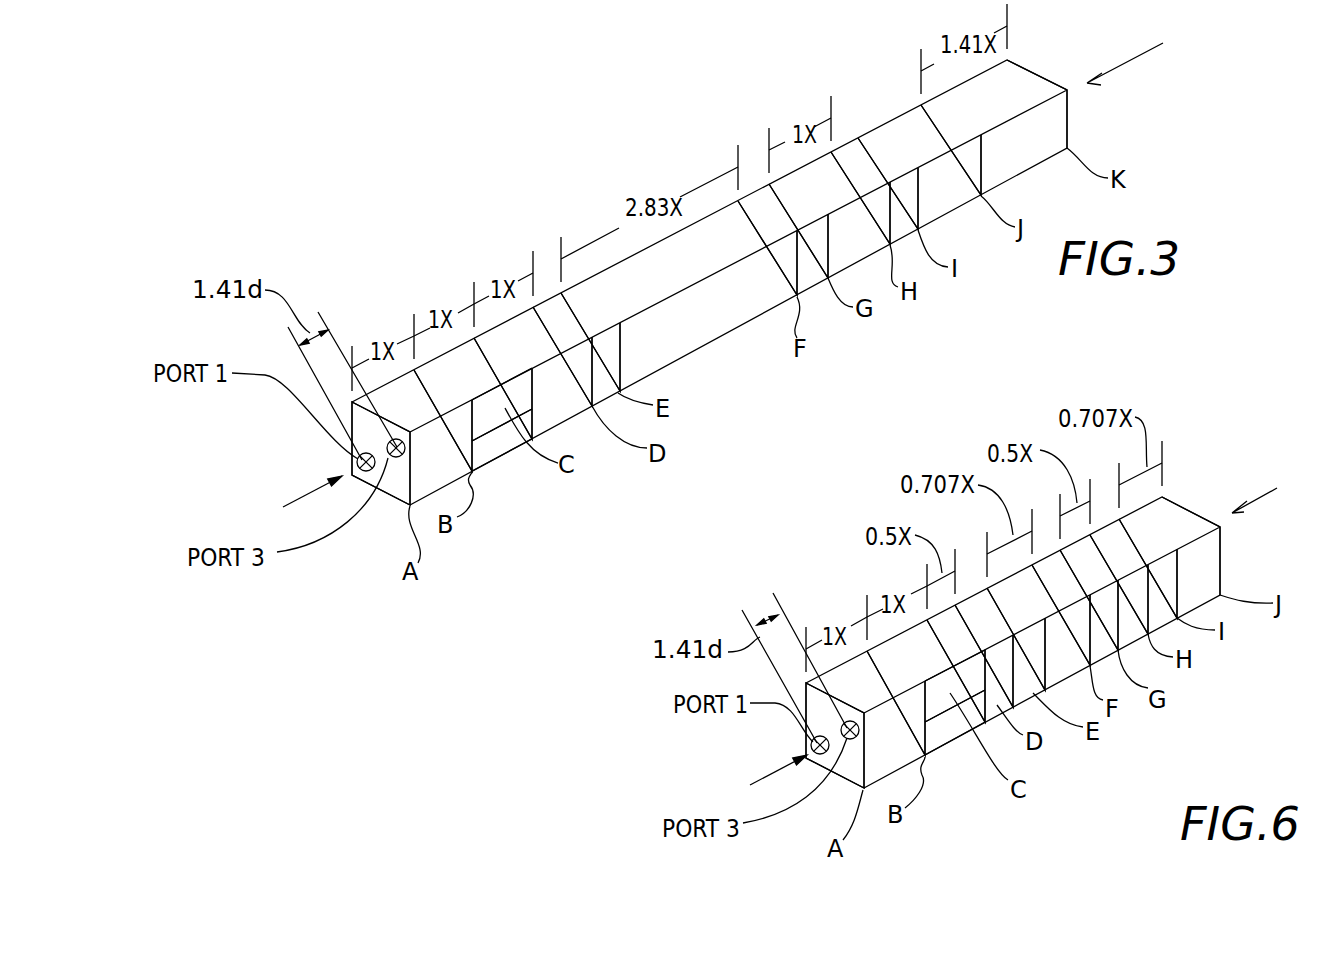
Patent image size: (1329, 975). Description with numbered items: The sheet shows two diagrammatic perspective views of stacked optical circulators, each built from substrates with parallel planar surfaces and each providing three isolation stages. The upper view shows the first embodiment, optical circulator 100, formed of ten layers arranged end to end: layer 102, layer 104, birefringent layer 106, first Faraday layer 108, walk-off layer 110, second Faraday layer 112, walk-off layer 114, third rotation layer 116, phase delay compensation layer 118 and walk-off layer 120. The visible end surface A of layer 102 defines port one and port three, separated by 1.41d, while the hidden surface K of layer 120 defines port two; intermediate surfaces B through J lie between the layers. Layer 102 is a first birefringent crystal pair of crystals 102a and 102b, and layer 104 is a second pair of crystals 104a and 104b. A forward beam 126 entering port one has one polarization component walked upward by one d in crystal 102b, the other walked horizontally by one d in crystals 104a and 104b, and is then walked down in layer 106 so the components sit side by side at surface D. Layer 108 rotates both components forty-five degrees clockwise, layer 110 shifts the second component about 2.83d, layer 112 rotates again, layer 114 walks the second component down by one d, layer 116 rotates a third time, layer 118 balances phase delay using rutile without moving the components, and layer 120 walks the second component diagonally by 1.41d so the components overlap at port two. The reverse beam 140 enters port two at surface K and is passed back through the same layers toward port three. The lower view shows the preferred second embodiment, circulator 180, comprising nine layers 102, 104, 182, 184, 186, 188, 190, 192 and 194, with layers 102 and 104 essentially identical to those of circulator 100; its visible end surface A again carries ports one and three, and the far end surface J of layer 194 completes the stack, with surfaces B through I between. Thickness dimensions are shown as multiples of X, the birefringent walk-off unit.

In FIG. 3, the optical circulator 100 is at (482, 185).
In FIG. 3, the first layer 102 is at (460, 462).
In FIG. 6, the first layer 102 is at (913, 747).
In FIG. 3, the crystal 102a is at (392, 494).
In FIG. 6, the crystal 102a is at (845, 790).
In FIG. 3, the crystal 102b is at (353, 488).
In FIG. 6, the crystal 102b is at (817, 765).
In FIG. 3, the second layer 104 is at (490, 463).
In FIG. 6, the second layer 104 is at (960, 737).
In FIG. 3, the crystal 104a is at (505, 445).
In FIG. 6, the crystal 104a is at (957, 722).
In FIG. 3, the crystal 104b is at (507, 450).
In FIG. 6, the crystal 104b is at (937, 733).
In FIG. 3, the birefringent layer 106 is at (580, 394).
In FIG. 3, the first non-reciprocal polarization rotation or Faraday layer 108 is at (606, 401).
In FIG. 3, the walk-off layer 110 is at (733, 316).
In FIG. 3, the second rotation/Faraday layer 112 is at (815, 287).
In FIG. 3, the walk-off layer 114 is at (880, 237).
In FIG. 3, the third polarization rotation layer 116 is at (908, 235).
In FIG. 3, the phase delay compensation layer 118 is at (967, 191).
In FIG. 3, the walk-off layer 120 is at (1040, 152).
In FIG. 3, the beam 126 is at (313, 487).
In FIG. 6, the beam 126 is at (787, 767).
In FIG. 3, the light beam 140 is at (1137, 55).
In FIG. 6, the light beam 140 is at (1263, 490).
In FIG. 6, the circulator 180 is at (603, 763).
In FIG. 6, the layer 182 is at (1000, 714).
In FIG. 6, the layer 184 is at (1027, 687).
In FIG. 6, the layer 186 is at (1085, 656).
In FIG. 6, the layer 188 is at (1102, 650).
In FIG. 6, the layer 190 is at (1133, 642).
In FIG. 6, the layer 192 is at (1165, 625).
In FIG. 6, the layer 194 is at (1217, 587).